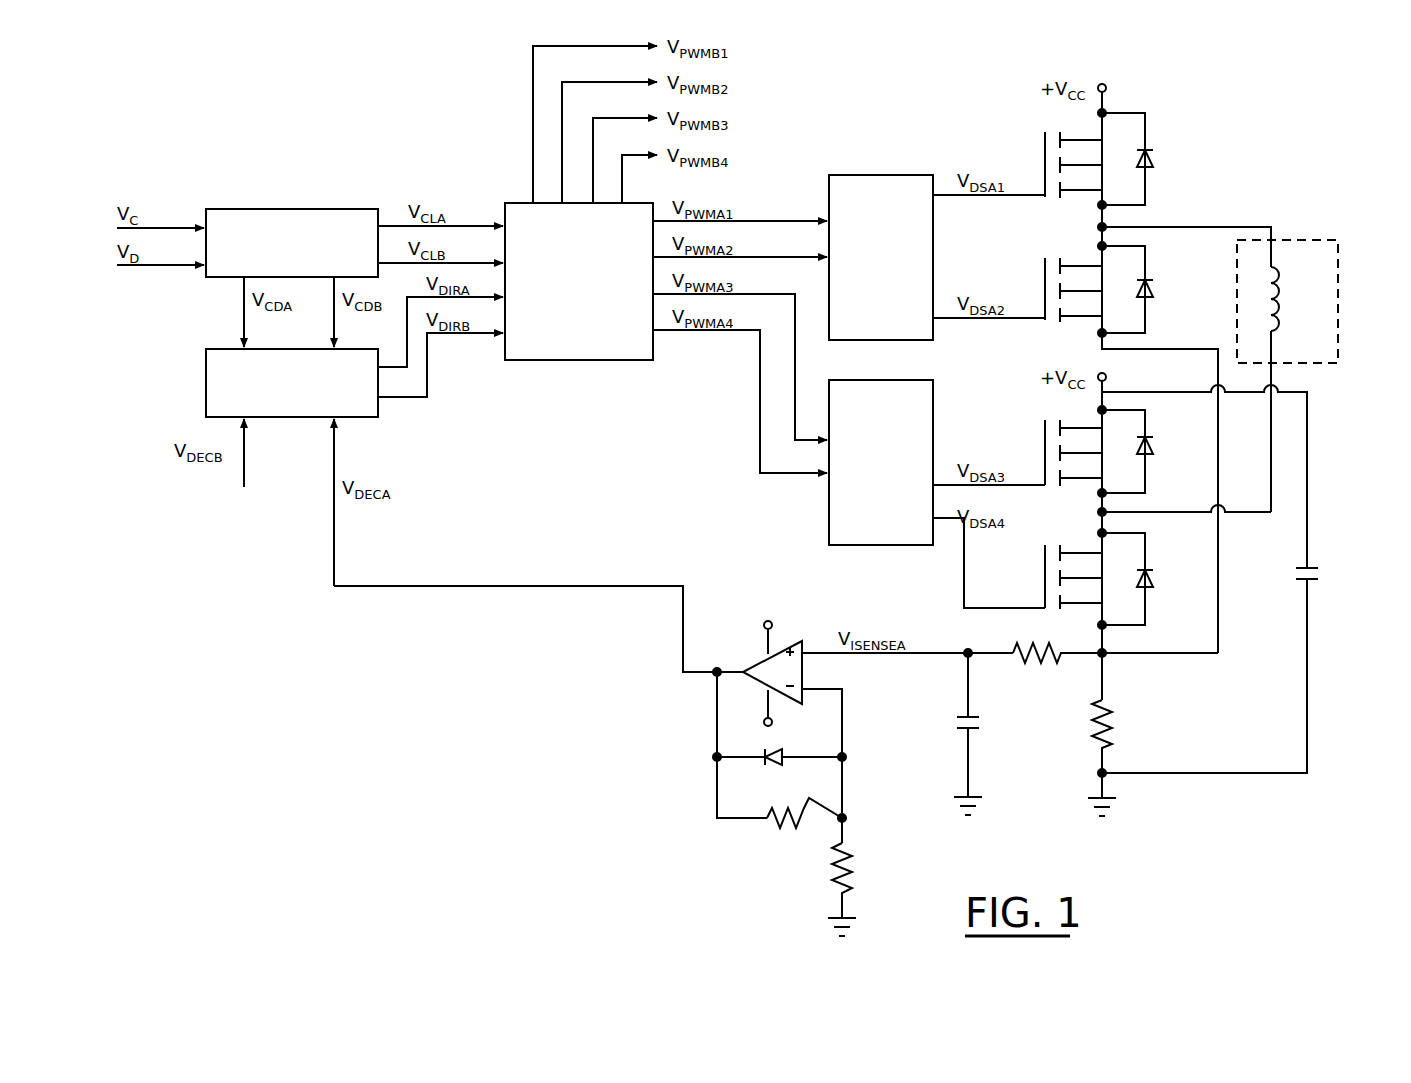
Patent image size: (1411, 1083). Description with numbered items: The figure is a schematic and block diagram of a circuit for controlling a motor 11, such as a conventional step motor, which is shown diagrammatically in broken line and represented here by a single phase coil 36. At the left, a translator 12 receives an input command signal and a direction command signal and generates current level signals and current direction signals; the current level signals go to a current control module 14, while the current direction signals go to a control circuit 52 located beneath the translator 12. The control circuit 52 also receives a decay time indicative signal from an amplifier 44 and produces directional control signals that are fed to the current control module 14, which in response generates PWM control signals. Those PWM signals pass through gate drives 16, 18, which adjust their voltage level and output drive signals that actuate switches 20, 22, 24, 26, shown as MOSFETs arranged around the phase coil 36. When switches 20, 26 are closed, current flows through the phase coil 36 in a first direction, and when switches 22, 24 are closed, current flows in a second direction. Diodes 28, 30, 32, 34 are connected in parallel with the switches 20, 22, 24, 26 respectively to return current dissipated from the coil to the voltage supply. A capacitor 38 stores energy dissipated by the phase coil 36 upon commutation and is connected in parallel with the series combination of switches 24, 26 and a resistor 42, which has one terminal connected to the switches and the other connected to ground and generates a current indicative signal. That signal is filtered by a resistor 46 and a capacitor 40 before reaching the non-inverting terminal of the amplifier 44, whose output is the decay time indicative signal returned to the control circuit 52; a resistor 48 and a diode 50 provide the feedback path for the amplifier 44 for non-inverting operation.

The motor 11 is at (1340, 258).
The translator 12 is at (296, 208).
The current control module 14 is at (563, 360).
The gate drive 16 is at (876, 175).
The gate drive 18 is at (862, 380).
The switch 20 is at (1045, 135).
The switch 22 is at (1045, 275).
The switch 24 is at (1045, 434).
The switch 26 is at (1045, 565).
The diode 28 is at (1150, 162).
The diode 30 is at (1150, 292).
The diode 32 is at (1150, 448).
The diode 34 is at (1150, 582).
The phase coil 36 is at (1280, 298).
The capacitor 38 is at (1312, 568).
The capacitor 40 is at (977, 730).
The resistor 42 is at (1113, 718).
The amplifier 44 is at (797, 645).
The resistor 46 is at (1040, 668).
The resistor 48 is at (770, 830).
The diode 50 is at (777, 763).
The control circuit 52 is at (206, 386).